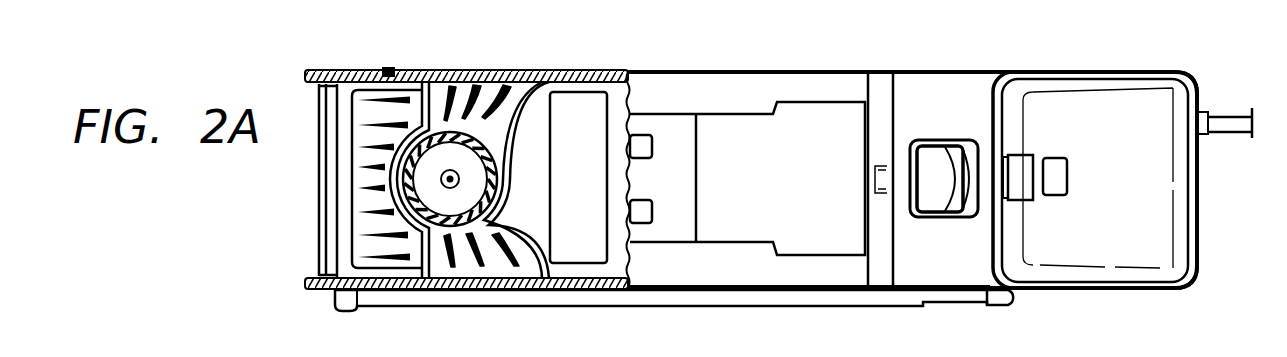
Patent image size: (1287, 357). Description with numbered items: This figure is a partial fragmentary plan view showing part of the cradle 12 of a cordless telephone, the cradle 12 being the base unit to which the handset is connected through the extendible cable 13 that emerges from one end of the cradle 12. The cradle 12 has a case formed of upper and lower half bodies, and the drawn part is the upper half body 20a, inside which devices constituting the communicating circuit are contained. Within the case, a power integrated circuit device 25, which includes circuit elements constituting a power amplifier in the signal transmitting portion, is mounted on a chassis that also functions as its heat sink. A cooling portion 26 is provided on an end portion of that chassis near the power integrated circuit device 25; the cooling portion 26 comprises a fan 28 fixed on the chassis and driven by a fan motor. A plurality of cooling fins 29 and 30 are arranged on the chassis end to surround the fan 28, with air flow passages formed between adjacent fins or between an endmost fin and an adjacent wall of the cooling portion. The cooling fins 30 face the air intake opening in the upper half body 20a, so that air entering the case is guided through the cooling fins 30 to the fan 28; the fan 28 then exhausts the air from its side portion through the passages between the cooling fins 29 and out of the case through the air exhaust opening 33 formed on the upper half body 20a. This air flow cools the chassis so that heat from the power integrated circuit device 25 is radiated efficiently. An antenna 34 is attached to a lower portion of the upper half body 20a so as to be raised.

The cradle 12 is at (1053, 55).
The extendible cable 13 is at (1228, 118).
The upper half body 20a is at (930, 80).
The power integrated circuit device 25 is at (580, 255).
The cooling portion 26 is at (388, 68).
The fan 28 is at (487, 166).
The cooling fins 29 is at (500, 85).
The cooling fins 30 is at (368, 199).
The air exhaust opening 33 is at (468, 76).
The antenna 34 is at (955, 293).